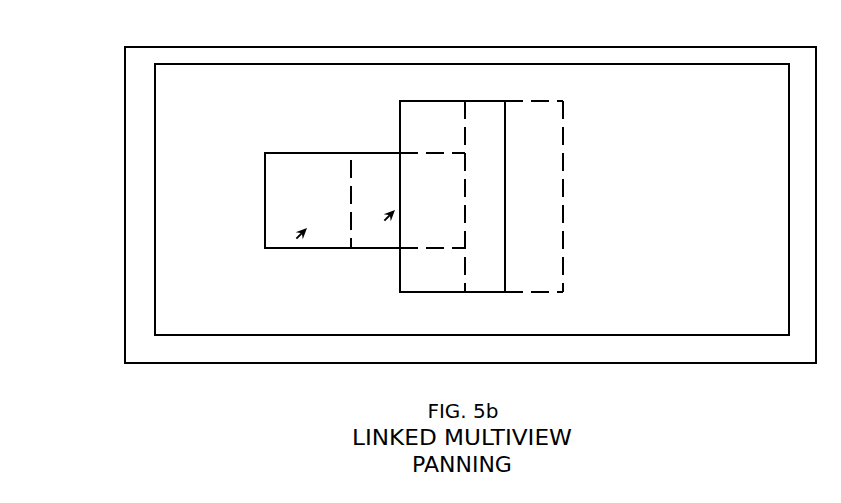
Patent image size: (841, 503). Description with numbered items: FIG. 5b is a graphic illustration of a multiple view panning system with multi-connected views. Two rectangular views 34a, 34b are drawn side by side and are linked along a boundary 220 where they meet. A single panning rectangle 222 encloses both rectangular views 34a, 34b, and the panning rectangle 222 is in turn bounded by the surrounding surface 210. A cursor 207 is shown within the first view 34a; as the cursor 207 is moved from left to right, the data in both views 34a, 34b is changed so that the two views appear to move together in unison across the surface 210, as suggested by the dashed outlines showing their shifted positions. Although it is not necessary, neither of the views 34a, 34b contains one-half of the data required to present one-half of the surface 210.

The surface 210 is at (128, 133).
The panning rectangle 222 is at (155, 278).
The rectangular view 34a is at (265, 202).
The rectangular view 34b is at (505, 152).
The boundary 220 is at (399, 173).
The cursor 207 is at (305, 244).